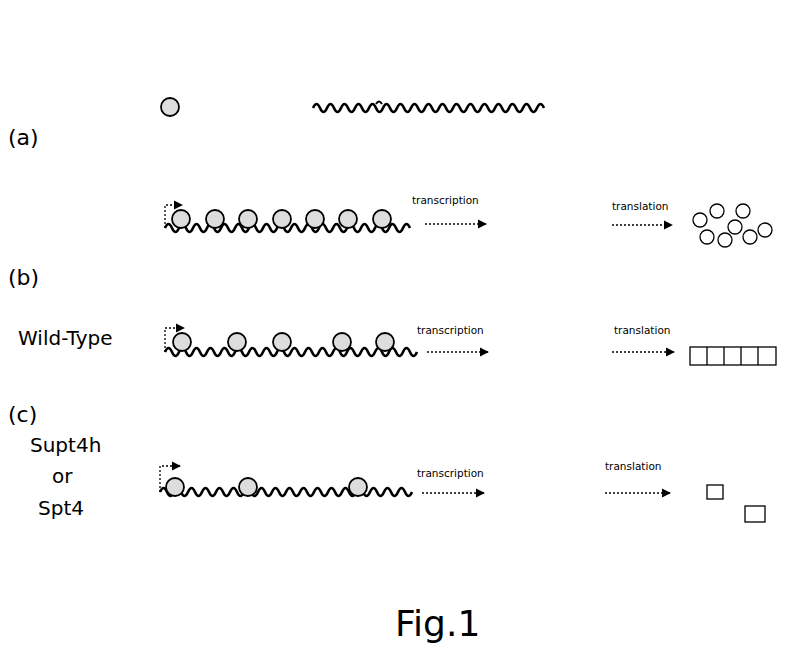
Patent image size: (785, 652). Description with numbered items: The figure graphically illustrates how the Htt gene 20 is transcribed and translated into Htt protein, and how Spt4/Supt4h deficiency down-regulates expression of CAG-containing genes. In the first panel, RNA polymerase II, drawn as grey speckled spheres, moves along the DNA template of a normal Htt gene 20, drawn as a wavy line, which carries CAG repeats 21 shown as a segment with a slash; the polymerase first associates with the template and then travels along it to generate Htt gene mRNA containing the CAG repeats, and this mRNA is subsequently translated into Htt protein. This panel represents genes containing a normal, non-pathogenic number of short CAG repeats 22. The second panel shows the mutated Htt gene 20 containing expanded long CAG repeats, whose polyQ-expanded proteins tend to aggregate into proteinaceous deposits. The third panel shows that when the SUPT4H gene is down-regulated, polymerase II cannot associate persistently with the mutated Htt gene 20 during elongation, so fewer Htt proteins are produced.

The Htt gene 20 is at (525, 80).
The CAG repeats 21 is at (377, 103).
The short CAG repeats 22 is at (237, 217).